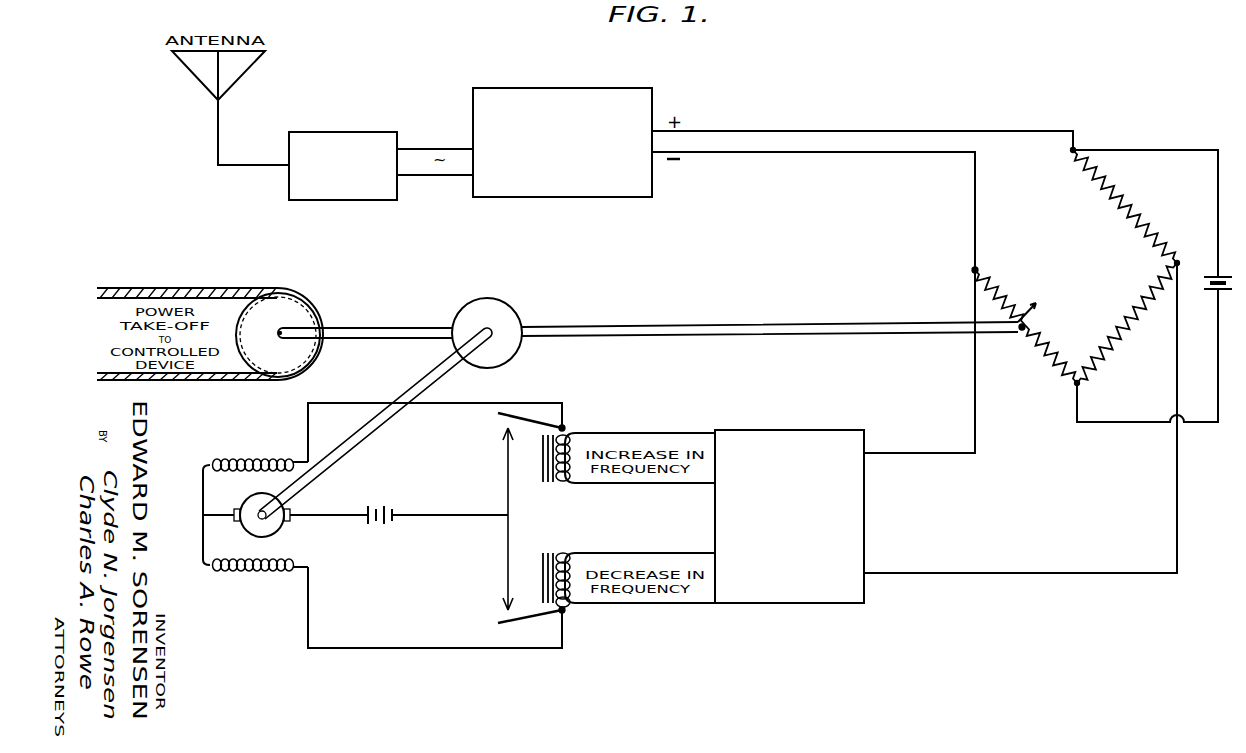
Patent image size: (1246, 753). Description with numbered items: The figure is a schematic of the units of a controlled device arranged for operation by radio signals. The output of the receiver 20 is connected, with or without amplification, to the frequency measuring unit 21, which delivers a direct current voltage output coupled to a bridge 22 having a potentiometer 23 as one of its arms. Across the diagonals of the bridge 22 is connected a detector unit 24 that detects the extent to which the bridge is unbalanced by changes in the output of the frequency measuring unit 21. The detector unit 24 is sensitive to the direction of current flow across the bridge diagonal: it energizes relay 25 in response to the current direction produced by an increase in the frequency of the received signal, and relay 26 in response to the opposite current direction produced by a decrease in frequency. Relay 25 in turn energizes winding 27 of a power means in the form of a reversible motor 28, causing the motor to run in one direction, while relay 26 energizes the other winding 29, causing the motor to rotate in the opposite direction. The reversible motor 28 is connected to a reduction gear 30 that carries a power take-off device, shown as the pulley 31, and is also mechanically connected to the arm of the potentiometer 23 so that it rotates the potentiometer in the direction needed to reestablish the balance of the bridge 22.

The receiver 20 is at (341, 134).
The frequency measuring unit 21 is at (555, 93).
The bridge 22 is at (1144, 209).
The potentiometer 23 is at (1023, 335).
The detector unit 24 is at (868, 500).
The relay 25 is at (566, 427).
The relay 26 is at (566, 613).
The winding 27 is at (246, 458).
The reversible motor 28 is at (280, 527).
The winding 29 is at (300, 565).
The reduction gear 30 is at (520, 322).
The pulley 31 is at (292, 352).